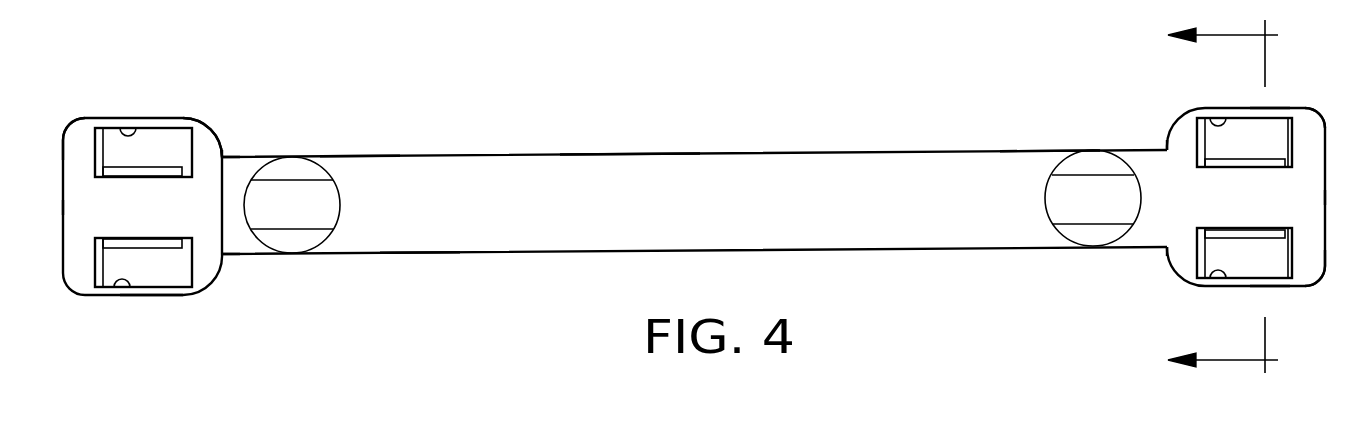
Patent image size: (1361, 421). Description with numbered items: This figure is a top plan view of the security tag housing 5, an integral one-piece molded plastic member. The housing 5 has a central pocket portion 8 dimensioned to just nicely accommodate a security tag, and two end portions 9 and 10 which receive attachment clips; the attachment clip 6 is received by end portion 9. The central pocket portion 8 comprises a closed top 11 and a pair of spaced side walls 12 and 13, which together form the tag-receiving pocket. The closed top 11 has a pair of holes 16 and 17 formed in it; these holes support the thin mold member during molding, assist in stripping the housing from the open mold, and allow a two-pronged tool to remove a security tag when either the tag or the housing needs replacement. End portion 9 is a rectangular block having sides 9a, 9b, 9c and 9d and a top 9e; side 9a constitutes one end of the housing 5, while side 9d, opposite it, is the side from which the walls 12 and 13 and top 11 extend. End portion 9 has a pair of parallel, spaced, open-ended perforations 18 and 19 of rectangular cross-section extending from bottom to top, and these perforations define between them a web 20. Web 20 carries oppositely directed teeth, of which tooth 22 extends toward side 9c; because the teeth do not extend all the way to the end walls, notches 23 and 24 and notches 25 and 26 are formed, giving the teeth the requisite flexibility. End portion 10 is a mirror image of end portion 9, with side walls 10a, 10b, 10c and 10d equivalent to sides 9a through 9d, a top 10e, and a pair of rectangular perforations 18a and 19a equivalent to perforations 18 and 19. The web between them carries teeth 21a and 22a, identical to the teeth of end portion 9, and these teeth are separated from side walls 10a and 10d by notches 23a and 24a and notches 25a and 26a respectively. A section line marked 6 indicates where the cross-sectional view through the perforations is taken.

The security tag housing 5 is at (353, 157).
The attachment clip 6 is at (1208, 199).
The central pocket portion 8 is at (594, 153).
The end portion 9 is at (1326, 174).
The side 9a is at (1326, 232).
The side 9b is at (1272, 290).
The side 9c is at (1272, 108).
The side 9d is at (1165, 140).
The top 9e is at (1284, 211).
The end portion 10 is at (63, 258).
The side wall 10a is at (63, 170).
The side wall 10b is at (152, 297).
The side wall 10c is at (183, 117).
The side wall 10d is at (225, 150).
The top 10e is at (165, 219).
The closed top 11 is at (454, 214).
The side wall 12 is at (418, 255).
The side wall 13 is at (1031, 151).
The hole 16 is at (1140, 198).
The hole 17 is at (338, 206).
The perforation 18 is at (1206, 274).
The perforation 18a is at (122, 282).
The perforation 19 is at (1222, 120).
The perforation 19a is at (127, 130).
The web 20 is at (1290, 197).
The tooth 21a is at (165, 247).
The tooth 22 is at (1240, 160).
The tooth 22a is at (156, 166).
The notch 23 is at (1289, 240).
The notch 23a is at (195, 290).
The notch 24 is at (1198, 263).
The notch 24a is at (100, 250).
The notch 25 is at (1289, 118).
The notch 25a is at (206, 126).
The notch 26 is at (1201, 165).
The notch 26a is at (102, 166).